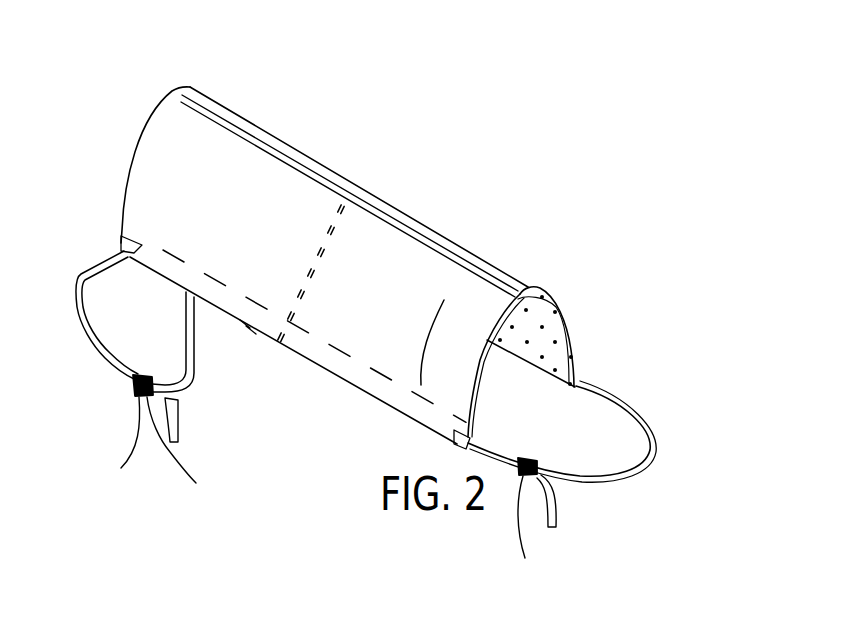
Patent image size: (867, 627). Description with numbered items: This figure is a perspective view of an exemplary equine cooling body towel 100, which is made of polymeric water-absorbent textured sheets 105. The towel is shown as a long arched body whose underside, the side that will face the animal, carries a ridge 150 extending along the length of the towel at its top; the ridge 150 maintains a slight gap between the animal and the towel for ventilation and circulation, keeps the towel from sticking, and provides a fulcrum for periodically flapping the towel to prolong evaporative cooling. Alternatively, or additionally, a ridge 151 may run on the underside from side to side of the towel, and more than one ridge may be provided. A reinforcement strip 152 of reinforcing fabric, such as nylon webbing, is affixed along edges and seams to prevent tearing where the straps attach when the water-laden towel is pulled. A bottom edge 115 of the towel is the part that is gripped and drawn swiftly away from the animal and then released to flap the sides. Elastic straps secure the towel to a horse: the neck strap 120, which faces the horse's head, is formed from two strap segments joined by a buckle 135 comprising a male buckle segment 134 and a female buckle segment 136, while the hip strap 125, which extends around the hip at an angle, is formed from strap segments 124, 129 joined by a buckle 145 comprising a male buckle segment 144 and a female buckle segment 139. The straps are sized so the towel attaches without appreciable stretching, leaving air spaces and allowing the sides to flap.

The equine cooling body towel 100 is at (118, 163).
The polymeric water-absorbent textured sheets 105 is at (577, 340).
The bottom edge 115 is at (362, 390).
The neck strap 120 is at (638, 474).
The strap segment 124 is at (195, 392).
The hip strap 125 is at (188, 402).
The strap segment 129 is at (87, 333).
The male buckle segment 134 is at (519, 480).
The buckle 135 is at (529, 528).
The female buckle segment 136 is at (532, 476).
The female buckle segment 139 is at (188, 447).
The male buckle segment 144 is at (137, 402).
The buckle 145 is at (114, 439).
The ridge 150 is at (563, 308).
The ridge 151 is at (337, 233).
The reinforcement strip 152 is at (444, 300).